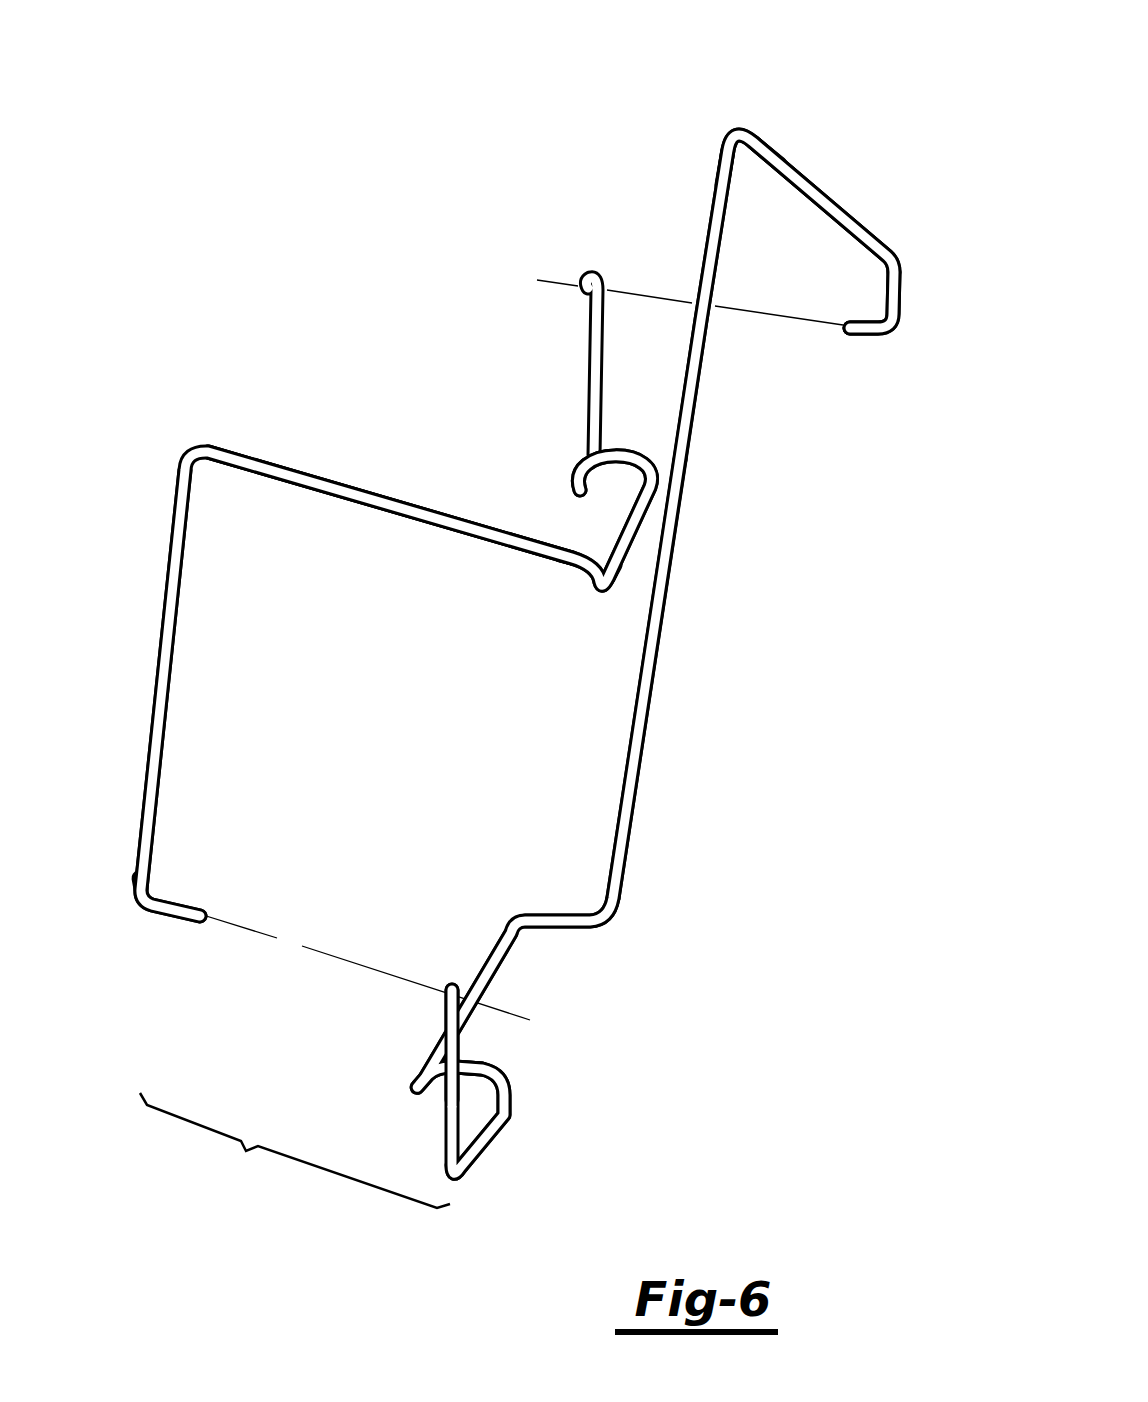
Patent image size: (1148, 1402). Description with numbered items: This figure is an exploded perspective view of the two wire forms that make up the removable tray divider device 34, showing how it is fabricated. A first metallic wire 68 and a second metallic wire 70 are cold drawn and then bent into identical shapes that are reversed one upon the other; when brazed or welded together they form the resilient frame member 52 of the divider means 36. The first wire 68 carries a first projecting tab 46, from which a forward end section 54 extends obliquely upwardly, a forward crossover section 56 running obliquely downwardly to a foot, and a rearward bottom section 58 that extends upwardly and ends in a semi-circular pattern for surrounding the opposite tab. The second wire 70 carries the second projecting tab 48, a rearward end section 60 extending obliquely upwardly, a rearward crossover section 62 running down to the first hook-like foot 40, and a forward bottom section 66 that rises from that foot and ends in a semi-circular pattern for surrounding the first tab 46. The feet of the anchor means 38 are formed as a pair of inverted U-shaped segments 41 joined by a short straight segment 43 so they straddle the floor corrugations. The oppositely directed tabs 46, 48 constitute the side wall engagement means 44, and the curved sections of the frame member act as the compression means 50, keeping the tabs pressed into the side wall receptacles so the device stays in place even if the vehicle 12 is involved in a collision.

The vehicle 12 is at (508, 1080).
The removable tray divider device 34 is at (274, 272).
The divider means 36 is at (397, 633).
The anchor means 38 is at (588, 606).
The first hook-like foot 40 is at (625, 447).
The inverted U-shaped segments 41 is at (617, 470).
The short straight segment 43 is at (625, 552).
The side wall engagement means 44 is at (886, 347).
The first projecting tab 46 is at (853, 332).
The second projecting tab 48 is at (170, 899).
The compression means 50 is at (740, 116).
The resilient frame member 52 is at (836, 190).
The forward end section 54 is at (847, 227).
The forward crossover section 56 is at (702, 358).
The rearward bottom section 58 is at (445, 1130).
The rearward end section 60 is at (167, 683).
The rearward crossover section 62 is at (387, 512).
The forward bottom section 66 is at (594, 355).
The first metallic wire 68 is at (664, 640).
The second metallic wire 70 is at (443, 511).